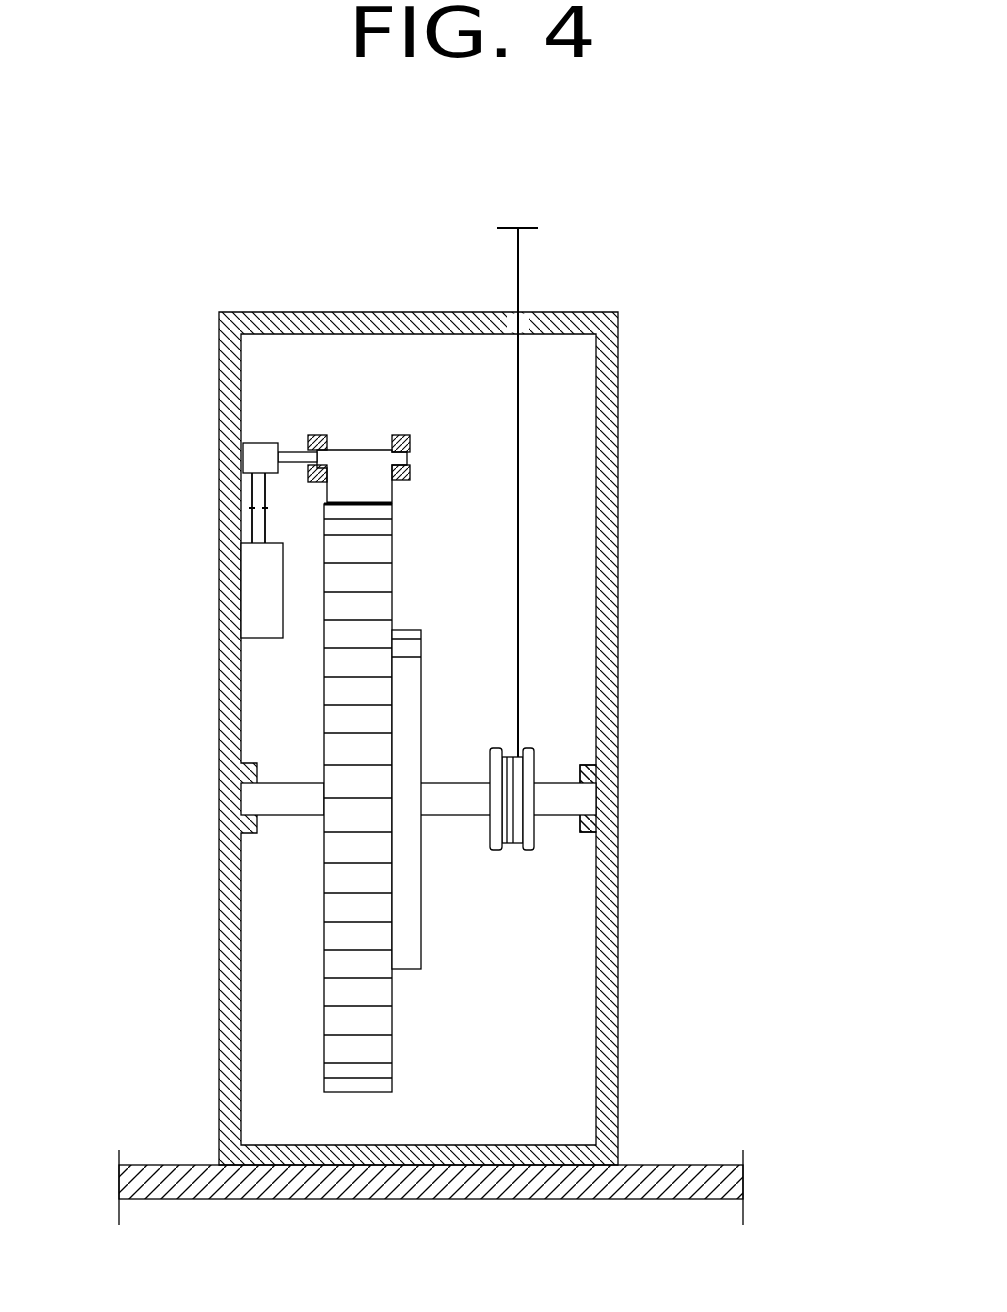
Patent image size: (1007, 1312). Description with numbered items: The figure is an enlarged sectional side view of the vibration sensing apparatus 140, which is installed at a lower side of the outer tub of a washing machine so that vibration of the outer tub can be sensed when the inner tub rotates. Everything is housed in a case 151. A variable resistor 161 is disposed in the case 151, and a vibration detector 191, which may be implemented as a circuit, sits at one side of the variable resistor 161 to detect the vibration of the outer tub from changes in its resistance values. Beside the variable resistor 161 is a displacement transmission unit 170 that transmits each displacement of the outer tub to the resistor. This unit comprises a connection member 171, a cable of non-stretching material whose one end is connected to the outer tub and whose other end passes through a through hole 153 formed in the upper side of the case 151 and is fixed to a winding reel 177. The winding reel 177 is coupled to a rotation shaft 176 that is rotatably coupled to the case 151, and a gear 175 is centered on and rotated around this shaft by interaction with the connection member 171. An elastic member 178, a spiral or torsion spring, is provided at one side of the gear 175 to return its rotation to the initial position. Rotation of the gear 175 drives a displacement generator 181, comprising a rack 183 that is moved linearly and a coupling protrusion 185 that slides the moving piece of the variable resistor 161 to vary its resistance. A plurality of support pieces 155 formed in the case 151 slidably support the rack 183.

The vibration sensing apparatus 140 is at (156, 309).
The case 151 is at (612, 485).
The through hole 153 is at (520, 308).
The support pieces 155 is at (333, 467).
The variable resistor 161 is at (253, 457).
The displacement transmission unit 170 is at (772, 528).
The connection member 171 is at (518, 680).
The gear 175 is at (372, 610).
The rotation shaft 176 is at (548, 782).
The winding reel 177 is at (533, 843).
The elastic member 178 is at (413, 945).
The displacement generator 181 is at (345, 215).
The rack 183 is at (335, 448).
The coupling protrusion 185 is at (290, 447).
The vibration detector 191 is at (252, 593).